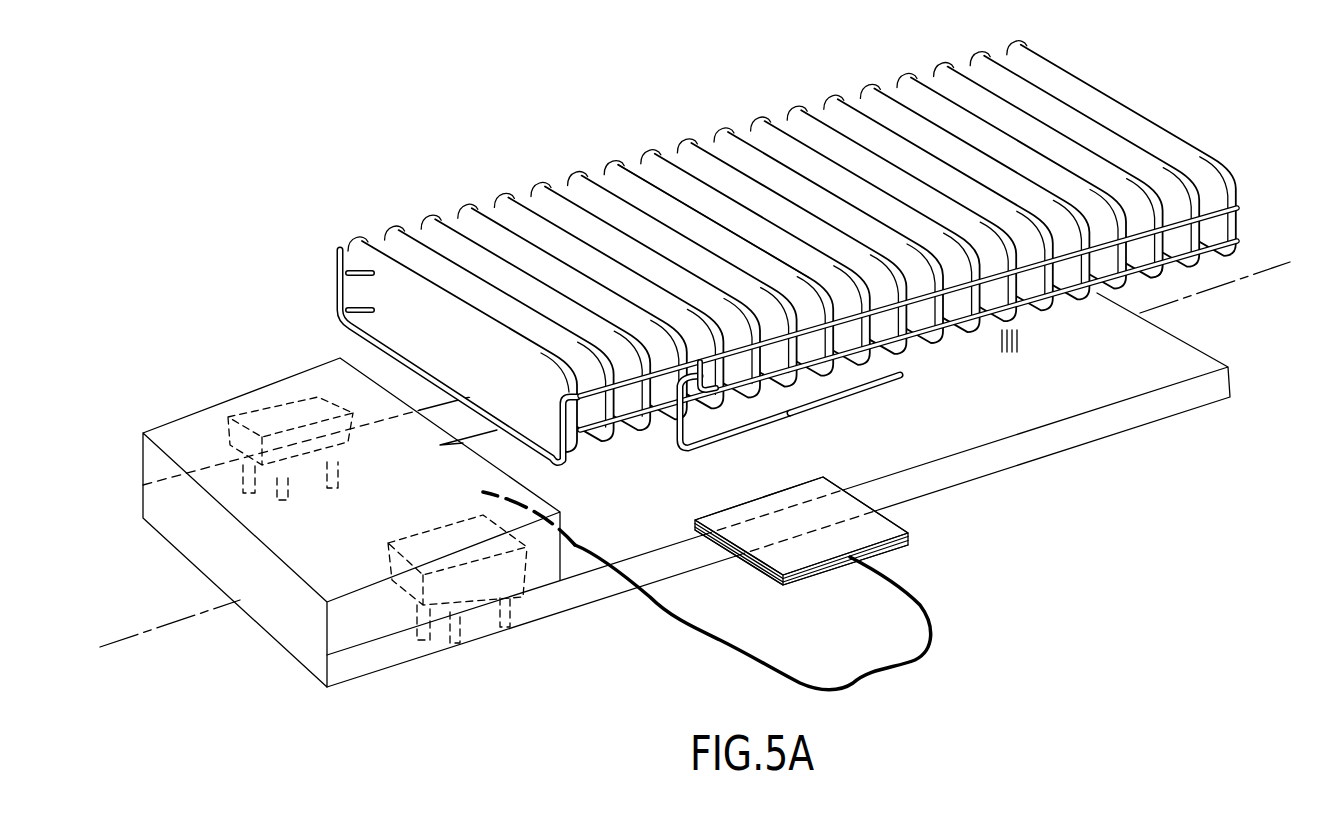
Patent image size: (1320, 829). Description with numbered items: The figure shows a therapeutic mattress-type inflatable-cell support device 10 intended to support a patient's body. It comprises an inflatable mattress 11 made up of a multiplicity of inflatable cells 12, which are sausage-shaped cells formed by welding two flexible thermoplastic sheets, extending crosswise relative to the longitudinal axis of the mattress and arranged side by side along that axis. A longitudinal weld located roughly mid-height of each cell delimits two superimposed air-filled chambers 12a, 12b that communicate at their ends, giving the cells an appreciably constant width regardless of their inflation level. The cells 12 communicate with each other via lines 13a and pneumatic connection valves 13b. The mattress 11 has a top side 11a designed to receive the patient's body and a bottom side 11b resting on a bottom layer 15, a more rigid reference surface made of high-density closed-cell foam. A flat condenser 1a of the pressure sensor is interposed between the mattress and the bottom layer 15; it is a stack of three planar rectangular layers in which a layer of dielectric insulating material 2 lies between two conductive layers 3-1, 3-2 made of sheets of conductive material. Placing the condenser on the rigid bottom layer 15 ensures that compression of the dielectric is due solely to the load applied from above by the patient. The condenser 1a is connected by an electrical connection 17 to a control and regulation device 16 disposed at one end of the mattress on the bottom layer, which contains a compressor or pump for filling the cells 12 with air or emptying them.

The support device 10 is at (272, 250).
The inflatable mattress 11 is at (462, 190).
The top side 11a is at (677, 220).
The bottom side 11b is at (1182, 294).
The inflatable cell 12 is at (830, 90).
The air-filled chamber 12a is at (346, 273).
The air-filled chamber 12b is at (340, 315).
The line 13a is at (870, 397).
The pneumatic connection valve 13b is at (723, 432).
The bottom layer 15 is at (1087, 395).
The control and regulation device 16 is at (200, 428).
The electrical connection 17 is at (828, 688).
The flat condenser 1a is at (876, 542).
The layer of dielectric insulating material 2 is at (897, 548).
The conductive layer 3-1 is at (885, 528).
The conductive layer 3-2 is at (877, 558).